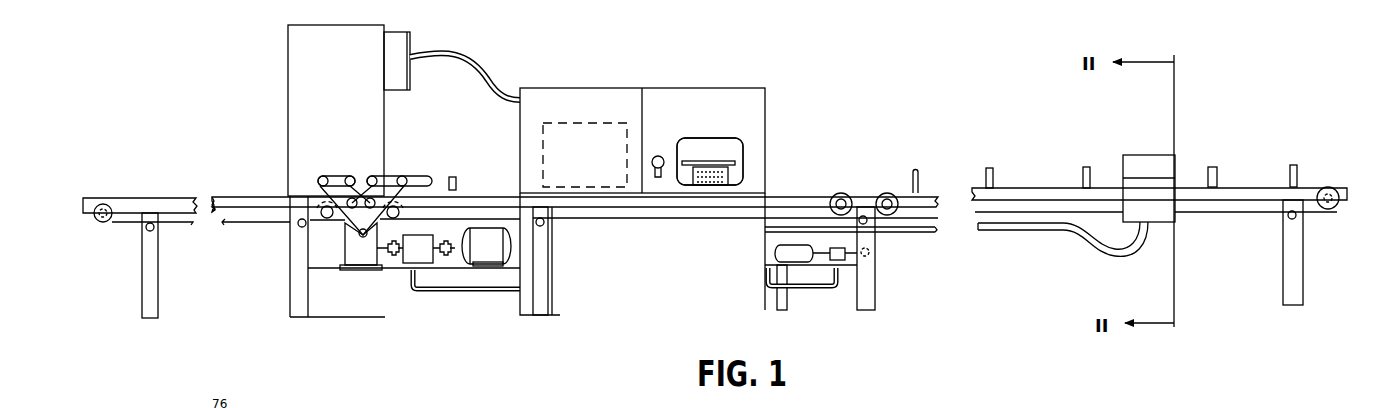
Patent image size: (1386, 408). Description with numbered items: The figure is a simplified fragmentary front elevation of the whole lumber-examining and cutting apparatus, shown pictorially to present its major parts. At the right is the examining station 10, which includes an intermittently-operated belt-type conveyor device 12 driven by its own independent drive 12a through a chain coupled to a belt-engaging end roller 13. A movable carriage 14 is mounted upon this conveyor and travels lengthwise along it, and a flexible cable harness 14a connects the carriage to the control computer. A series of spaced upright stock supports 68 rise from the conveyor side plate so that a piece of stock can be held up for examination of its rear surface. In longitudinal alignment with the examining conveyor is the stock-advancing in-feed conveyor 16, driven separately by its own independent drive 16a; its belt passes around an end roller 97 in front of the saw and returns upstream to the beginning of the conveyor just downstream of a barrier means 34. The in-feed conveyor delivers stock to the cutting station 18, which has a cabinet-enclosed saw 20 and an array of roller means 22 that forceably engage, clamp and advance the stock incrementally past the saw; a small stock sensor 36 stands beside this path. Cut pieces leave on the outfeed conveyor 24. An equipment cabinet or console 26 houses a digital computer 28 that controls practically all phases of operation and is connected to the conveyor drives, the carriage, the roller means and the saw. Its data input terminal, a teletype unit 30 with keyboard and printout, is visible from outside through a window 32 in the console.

The examining station 10 is at (1047, 173).
The conveyor device 12 is at (1243, 185).
The independent drive 12a is at (836, 296).
The end roller 13 is at (887, 196).
The movable carriage 14 is at (1140, 197).
The flexible cable harness 14a is at (1015, 232).
The in-feed conveyor 16 is at (802, 192).
The independent drive 16a is at (478, 292).
The cutting station 18 is at (452, 97).
The cabinet-enclosed saw 20 is at (345, 106).
The roller means 22 is at (403, 167).
The outfeed conveyor 24 is at (180, 182).
The equipment cabinet or console 26 is at (590, 87).
The digital computer 28 is at (605, 142).
The teletype unit 30 is at (722, 158).
The window 32 is at (702, 145).
The barrier means 34 is at (917, 168).
The sensor 36 is at (458, 178).
The upright stock supports 68 is at (990, 167).
The end roller 97 is at (396, 218).